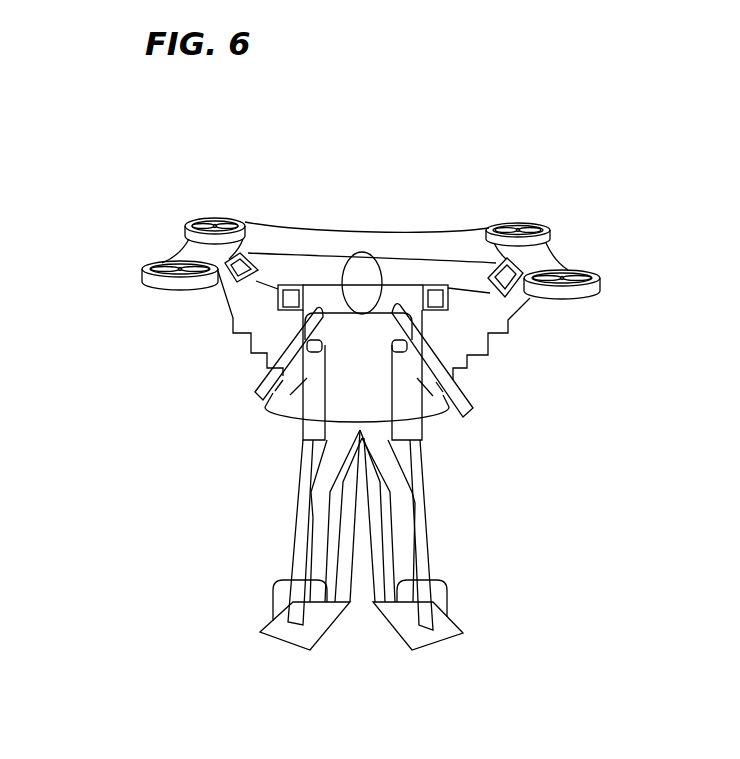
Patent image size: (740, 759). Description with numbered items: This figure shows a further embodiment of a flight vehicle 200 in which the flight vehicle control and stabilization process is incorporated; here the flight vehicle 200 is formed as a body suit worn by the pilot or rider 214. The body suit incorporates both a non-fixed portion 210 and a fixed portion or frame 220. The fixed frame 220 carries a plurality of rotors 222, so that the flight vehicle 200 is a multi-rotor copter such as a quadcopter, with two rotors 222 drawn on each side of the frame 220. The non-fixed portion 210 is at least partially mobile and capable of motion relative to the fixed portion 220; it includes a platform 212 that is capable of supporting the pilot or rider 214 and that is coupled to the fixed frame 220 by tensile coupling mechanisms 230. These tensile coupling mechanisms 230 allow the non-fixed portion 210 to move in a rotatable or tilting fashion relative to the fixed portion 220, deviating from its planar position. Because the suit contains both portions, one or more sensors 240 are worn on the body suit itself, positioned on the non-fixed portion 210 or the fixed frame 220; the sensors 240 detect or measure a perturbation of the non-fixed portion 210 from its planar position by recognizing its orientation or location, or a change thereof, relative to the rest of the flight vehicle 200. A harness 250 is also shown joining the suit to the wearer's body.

The flight vehicle 200 is at (540, 121).
The non-fixed portion 210 is at (466, 513).
The platform 212 is at (410, 637).
The pilot or rider 214 is at (363, 250).
The fixed portion or frame 220 is at (409, 230).
The rotors 222 is at (198, 226).
The tensile coupling mechanisms 230 is at (230, 340).
The sensors 240 is at (247, 256).
The harness 250 is at (301, 437).